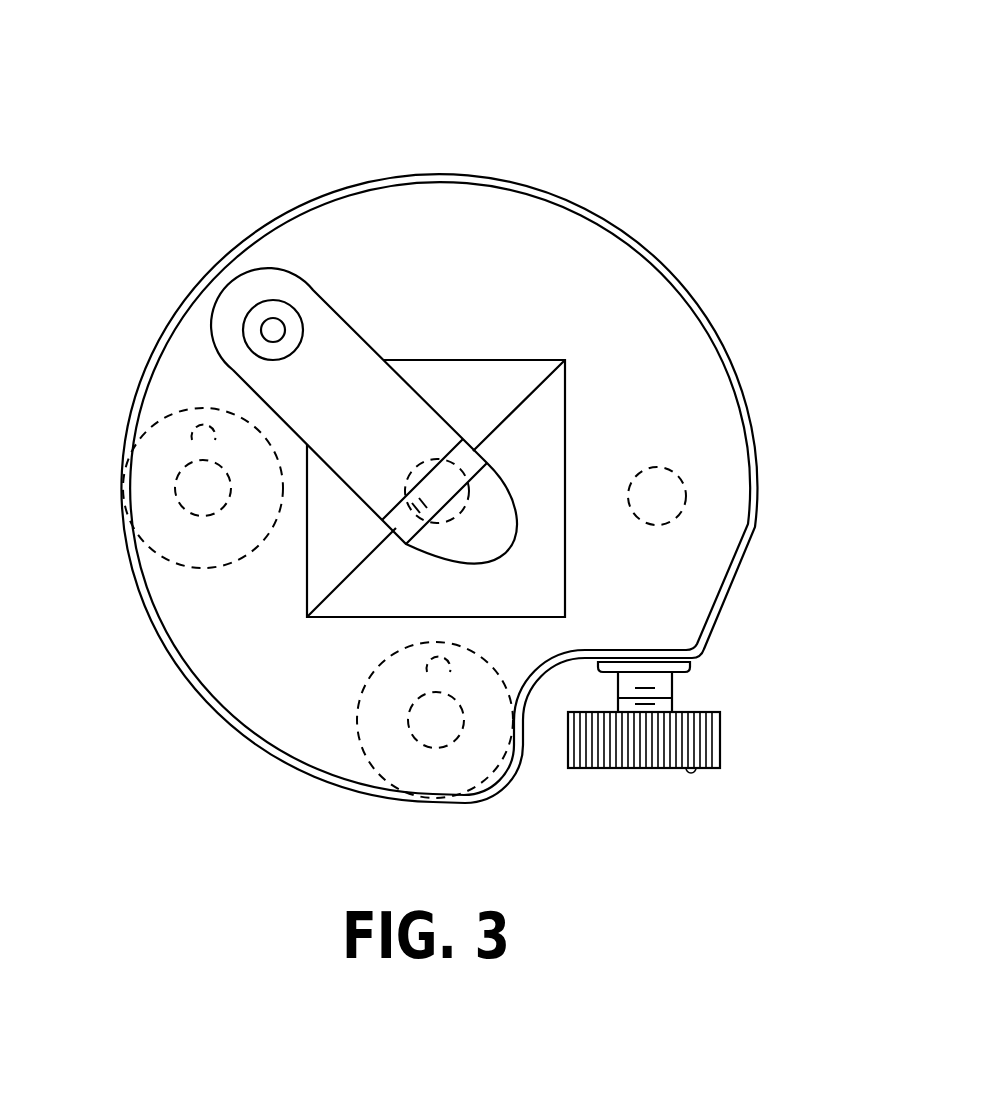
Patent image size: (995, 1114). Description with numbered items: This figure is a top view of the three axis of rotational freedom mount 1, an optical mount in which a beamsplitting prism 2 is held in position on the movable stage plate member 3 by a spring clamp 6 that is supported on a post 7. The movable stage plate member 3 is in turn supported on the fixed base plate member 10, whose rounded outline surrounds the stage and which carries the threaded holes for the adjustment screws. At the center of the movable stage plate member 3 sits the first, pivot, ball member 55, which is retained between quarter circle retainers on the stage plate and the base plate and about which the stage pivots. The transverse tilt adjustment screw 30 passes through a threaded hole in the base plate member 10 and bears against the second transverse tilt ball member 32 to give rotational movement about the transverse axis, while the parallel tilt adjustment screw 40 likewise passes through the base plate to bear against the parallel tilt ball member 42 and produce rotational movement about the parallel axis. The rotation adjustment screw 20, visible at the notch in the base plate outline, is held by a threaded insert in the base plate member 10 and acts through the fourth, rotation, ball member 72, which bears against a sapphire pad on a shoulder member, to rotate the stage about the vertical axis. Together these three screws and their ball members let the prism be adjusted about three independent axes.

The three axis of rotational freedom mount 1 is at (725, 147).
The beamsplitting prism 2 is at (542, 455).
The movable stage plate member 3 is at (650, 320).
The spring clamp 6 is at (357, 358).
The post 7 is at (268, 322).
The fixed base plate member 10 is at (757, 497).
The rotation adjustment screw 20 is at (648, 768).
The transverse tilt adjustment screw 30 is at (363, 748).
The second transverse tilt ball member 32 is at (430, 745).
The parallel tilt adjustment screw 40 is at (180, 565).
The parallel tilt ball member 42 is at (182, 473).
The first pivot ball member 55 is at (428, 456).
The fourth rotation ball member 72 is at (683, 500).